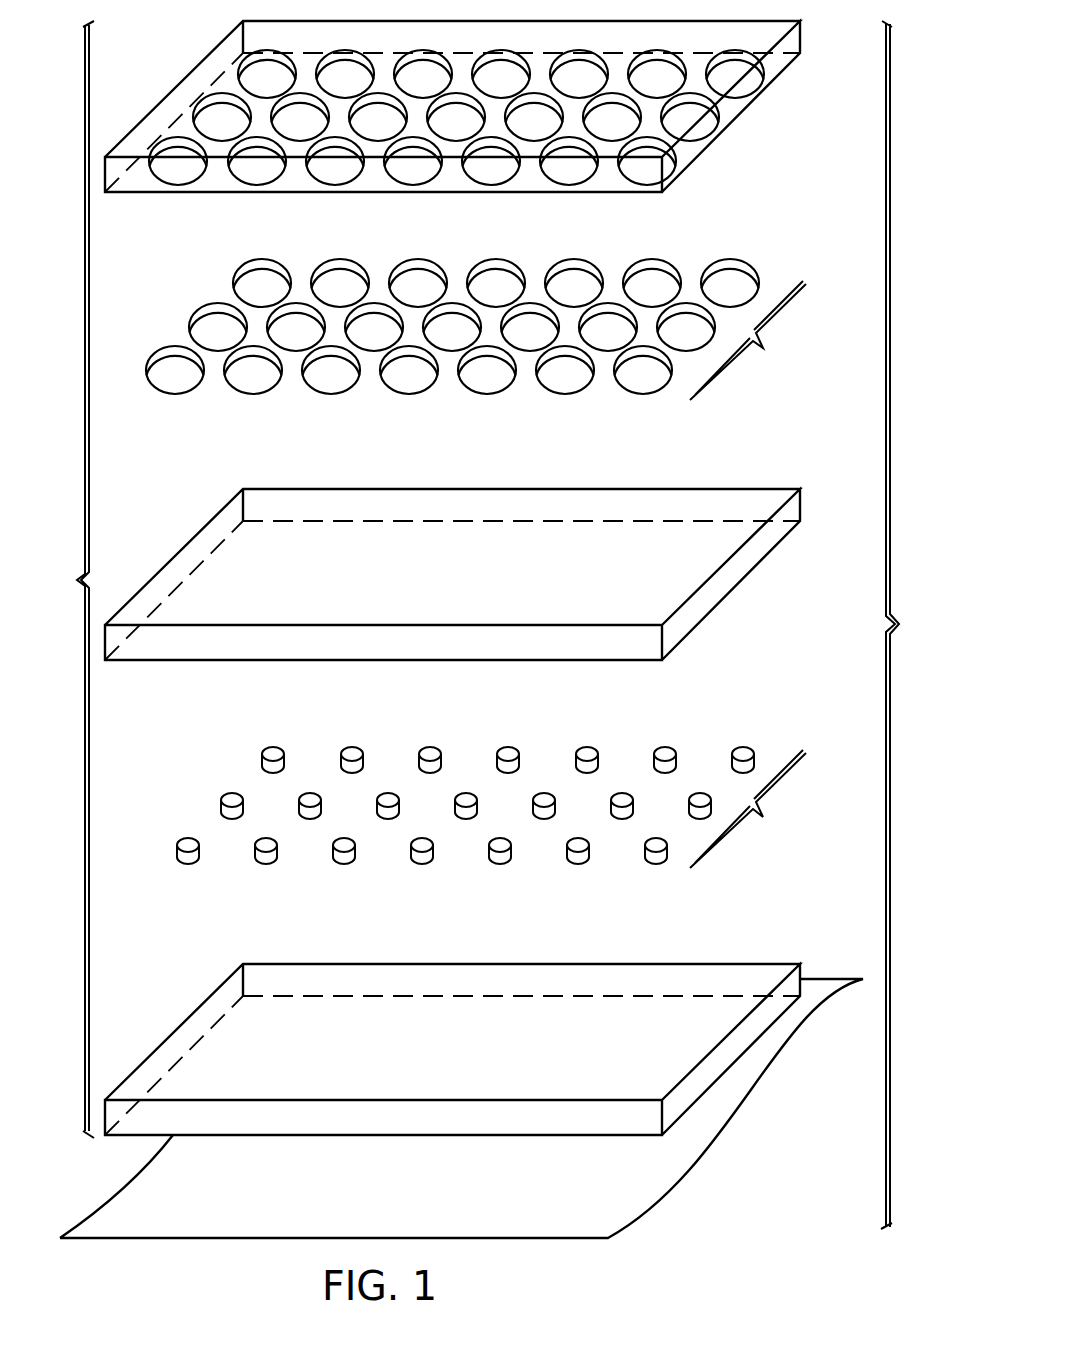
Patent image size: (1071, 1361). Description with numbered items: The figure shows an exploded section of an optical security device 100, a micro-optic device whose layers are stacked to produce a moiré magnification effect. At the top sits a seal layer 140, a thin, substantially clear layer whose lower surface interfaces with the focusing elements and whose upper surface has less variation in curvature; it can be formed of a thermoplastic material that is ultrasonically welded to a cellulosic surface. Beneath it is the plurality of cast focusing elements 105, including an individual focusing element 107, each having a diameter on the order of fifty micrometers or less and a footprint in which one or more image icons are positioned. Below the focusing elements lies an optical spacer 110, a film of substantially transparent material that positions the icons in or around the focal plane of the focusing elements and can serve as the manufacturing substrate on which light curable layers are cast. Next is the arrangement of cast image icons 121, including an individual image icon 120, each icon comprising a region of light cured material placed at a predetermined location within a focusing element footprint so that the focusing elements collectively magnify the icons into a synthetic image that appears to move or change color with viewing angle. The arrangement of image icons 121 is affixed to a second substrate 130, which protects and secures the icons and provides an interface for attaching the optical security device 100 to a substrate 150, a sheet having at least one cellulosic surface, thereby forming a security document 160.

The optical security device 100 is at (62, 579).
The plurality of cast focusing elements 105 is at (752, 340).
The focusing element 107 is at (170, 347).
The optical spacer 110 is at (172, 553).
The image icon 120 is at (185, 838).
The arrangement of cast image icons 121 is at (750, 809).
The second substrate 130 is at (172, 1028).
The seal layer 140 is at (172, 90).
The substrate 150 is at (640, 1213).
The security document 160 is at (914, 625).